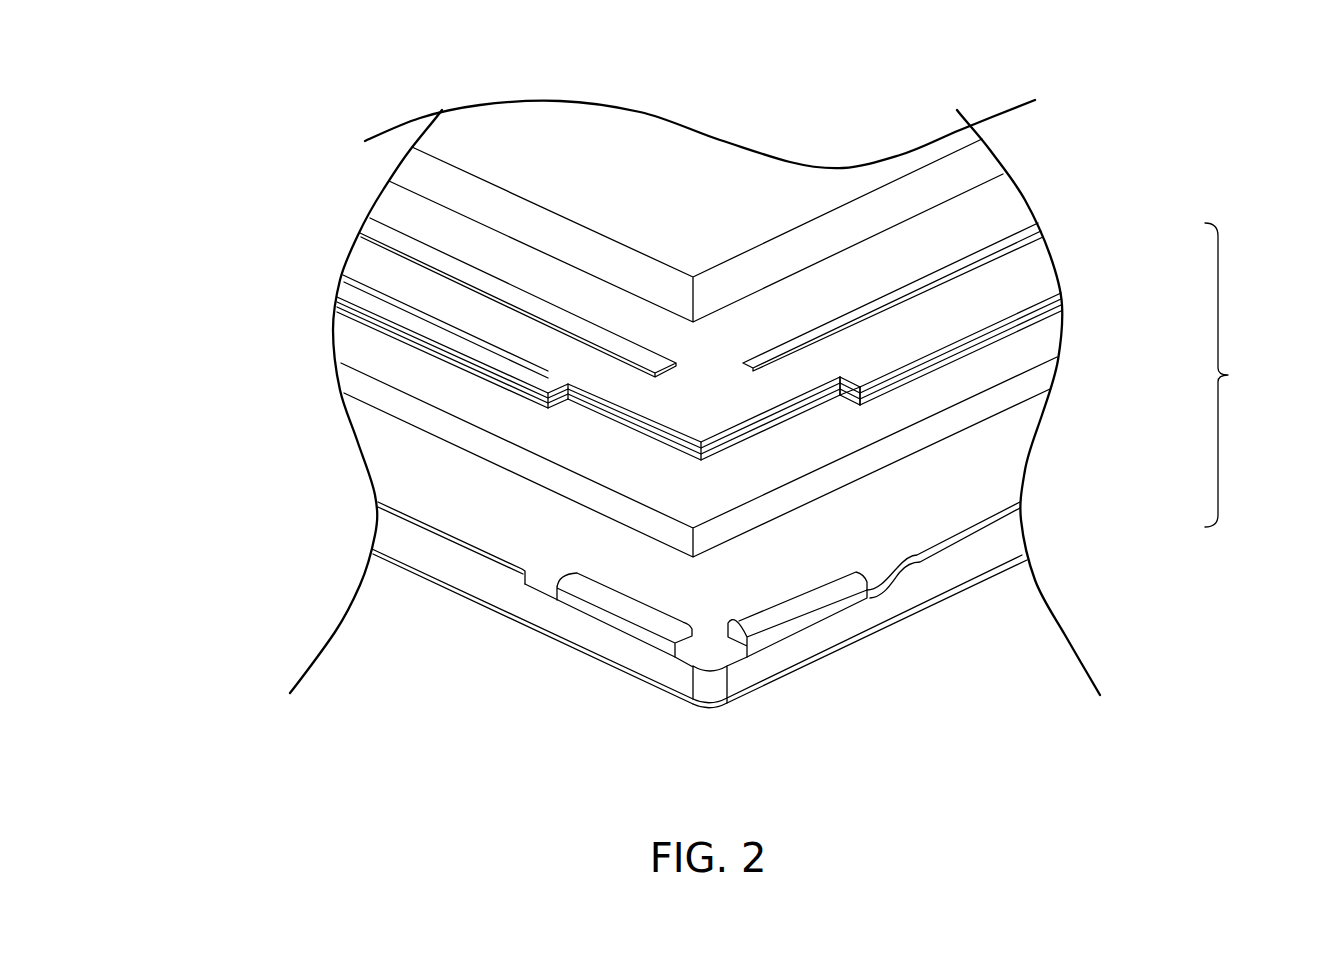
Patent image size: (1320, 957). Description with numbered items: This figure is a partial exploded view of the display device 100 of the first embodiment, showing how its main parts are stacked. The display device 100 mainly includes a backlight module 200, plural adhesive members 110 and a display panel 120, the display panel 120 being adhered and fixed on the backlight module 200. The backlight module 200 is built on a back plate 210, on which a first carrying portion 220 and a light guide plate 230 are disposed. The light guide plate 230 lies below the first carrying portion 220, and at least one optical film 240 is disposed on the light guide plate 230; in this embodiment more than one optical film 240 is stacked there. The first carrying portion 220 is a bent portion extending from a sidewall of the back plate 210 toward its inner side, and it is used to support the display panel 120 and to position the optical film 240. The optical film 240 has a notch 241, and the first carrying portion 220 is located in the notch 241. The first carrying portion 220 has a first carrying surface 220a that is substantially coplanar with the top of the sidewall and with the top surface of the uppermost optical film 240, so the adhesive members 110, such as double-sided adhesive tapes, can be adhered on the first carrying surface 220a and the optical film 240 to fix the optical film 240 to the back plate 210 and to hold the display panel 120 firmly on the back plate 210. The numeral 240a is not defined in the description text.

The display device 100 is at (201, 79).
The adhesive members 110 is at (788, 352).
The display panel 120 is at (973, 165).
The backlight module 200 is at (1244, 375).
The back plate 210 is at (1002, 532).
The first carrying portion 220 is at (848, 568).
The first carrying surface 220a is at (773, 610).
The light guide plate 230 is at (1042, 375).
The optical film 240 is at (1033, 273).
The optical film 240a is at (1038, 342).
The notch 241 is at (820, 378).